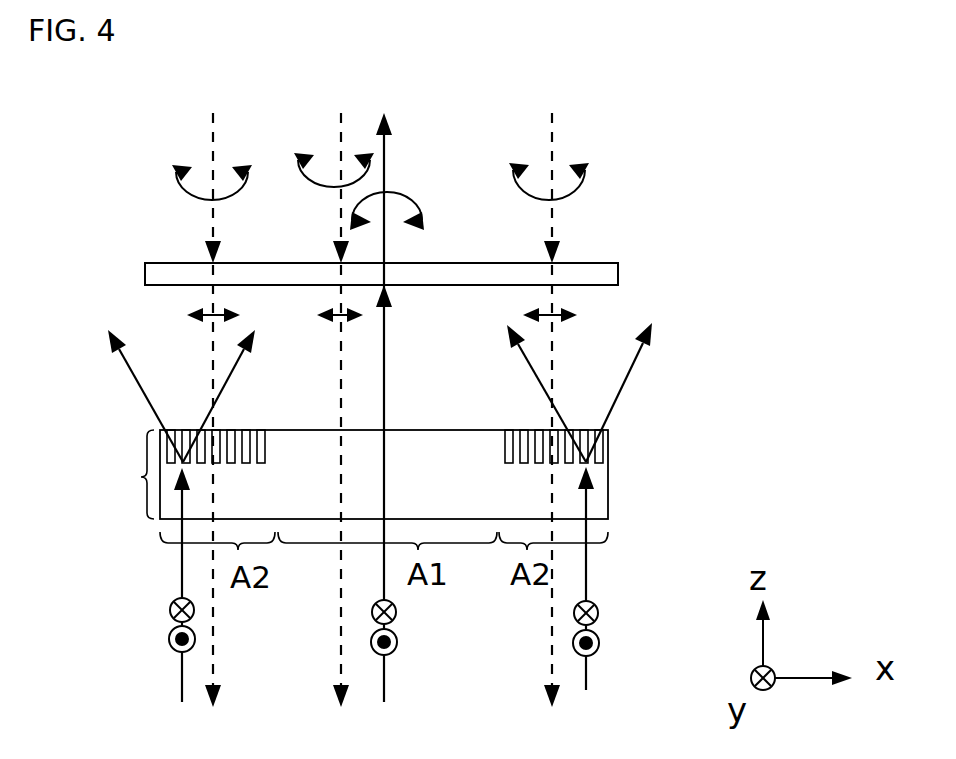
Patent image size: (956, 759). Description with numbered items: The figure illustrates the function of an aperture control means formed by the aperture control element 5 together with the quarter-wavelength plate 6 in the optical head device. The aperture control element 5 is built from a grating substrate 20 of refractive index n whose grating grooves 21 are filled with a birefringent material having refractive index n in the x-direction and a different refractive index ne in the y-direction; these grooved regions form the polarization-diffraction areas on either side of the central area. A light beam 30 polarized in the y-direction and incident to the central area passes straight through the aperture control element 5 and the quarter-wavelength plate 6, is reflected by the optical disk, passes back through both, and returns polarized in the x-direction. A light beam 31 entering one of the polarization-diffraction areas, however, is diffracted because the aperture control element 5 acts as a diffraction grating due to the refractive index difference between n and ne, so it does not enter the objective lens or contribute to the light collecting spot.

The aperture control element 5 is at (141, 477).
The quarter-wavelength plate 6 is at (145, 272).
The grating substrate 20 is at (593, 498).
The grating grooves 21 is at (262, 446).
The light beam 30 is at (387, 673).
The light beam 31 is at (182, 570).